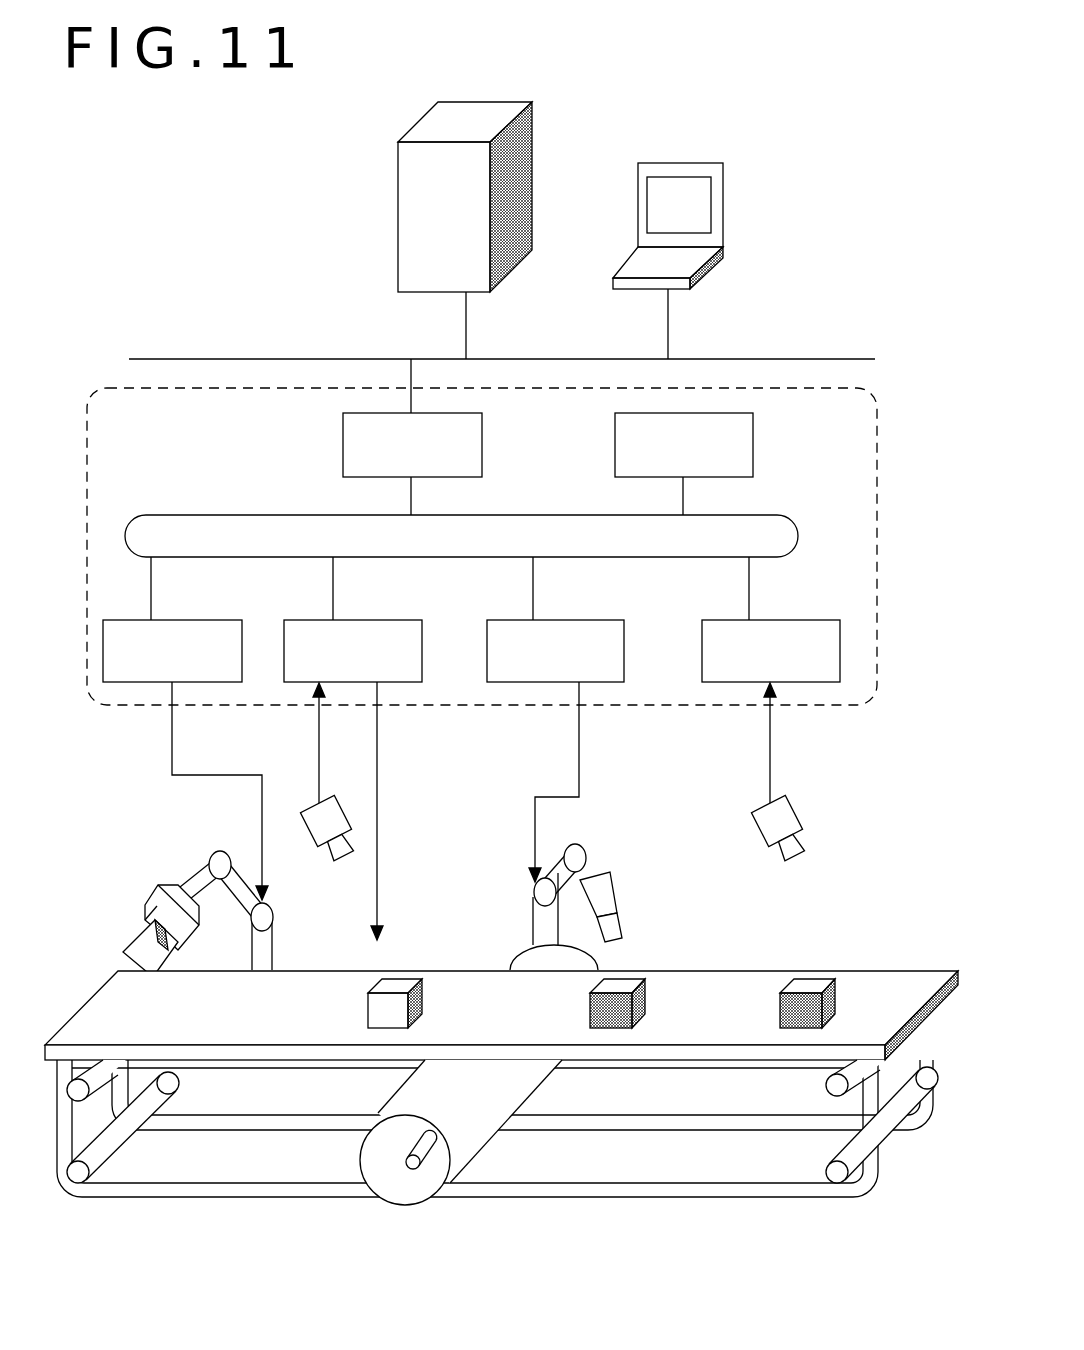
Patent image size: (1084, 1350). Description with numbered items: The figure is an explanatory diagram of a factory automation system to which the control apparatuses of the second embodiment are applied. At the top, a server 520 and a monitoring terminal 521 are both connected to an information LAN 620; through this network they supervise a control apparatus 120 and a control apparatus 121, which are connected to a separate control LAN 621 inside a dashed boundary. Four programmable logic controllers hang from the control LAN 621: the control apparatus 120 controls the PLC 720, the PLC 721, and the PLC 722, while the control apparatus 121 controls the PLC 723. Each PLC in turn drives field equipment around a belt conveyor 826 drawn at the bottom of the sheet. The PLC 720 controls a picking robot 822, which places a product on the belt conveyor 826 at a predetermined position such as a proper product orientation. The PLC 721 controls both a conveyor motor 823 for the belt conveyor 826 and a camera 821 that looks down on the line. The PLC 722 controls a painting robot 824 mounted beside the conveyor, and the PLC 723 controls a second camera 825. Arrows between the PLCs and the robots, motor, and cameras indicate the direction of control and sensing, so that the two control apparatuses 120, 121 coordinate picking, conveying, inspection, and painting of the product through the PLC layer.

The control apparatus 120 is at (343, 446).
The control apparatus 121 is at (615, 446).
The server 520 is at (532, 160).
The monitoring terminal 521 is at (723, 213).
The information LAN 620 is at (805, 358).
The control LAN 621 is at (778, 514).
The PLC 720 is at (177, 617).
The PLC 721 is at (360, 617).
The PLC 722 is at (558, 617).
The PLC 723 is at (776, 617).
The camera 821 is at (346, 806).
The picking robot 822 is at (152, 890).
The conveyor motor 823 is at (380, 957).
The painting robot 824 is at (596, 856).
The camera 825 is at (792, 806).
The belt conveyor 826 is at (532, 1197).